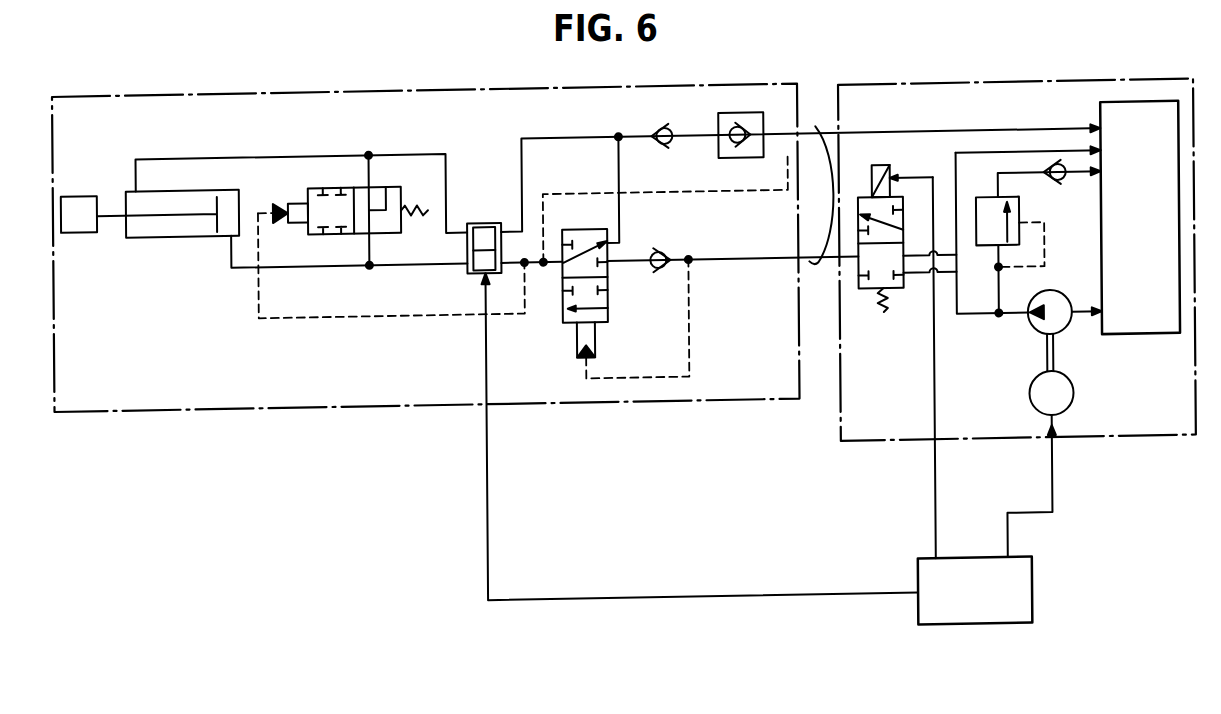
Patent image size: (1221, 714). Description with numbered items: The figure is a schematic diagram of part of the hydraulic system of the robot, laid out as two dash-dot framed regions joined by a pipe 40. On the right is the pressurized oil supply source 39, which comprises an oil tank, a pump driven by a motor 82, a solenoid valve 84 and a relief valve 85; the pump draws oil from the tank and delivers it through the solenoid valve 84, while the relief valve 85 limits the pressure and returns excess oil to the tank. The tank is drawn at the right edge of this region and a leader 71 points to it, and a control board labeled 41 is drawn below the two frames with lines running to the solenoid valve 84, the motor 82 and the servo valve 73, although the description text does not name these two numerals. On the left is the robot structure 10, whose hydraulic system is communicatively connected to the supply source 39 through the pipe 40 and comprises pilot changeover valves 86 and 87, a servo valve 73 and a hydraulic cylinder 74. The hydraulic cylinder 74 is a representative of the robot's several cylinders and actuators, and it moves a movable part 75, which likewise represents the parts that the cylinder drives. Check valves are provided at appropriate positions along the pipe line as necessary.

The robot structure 10 is at (476, 96).
The pressurized oil supply source 39 is at (921, 99).
The pipe 40 is at (813, 138).
The control board 41 is at (918, 573).
The oil tank 71 is at (1100, 272).
The servo valve 73 is at (485, 231).
The hydraulic cylinder 74 is at (180, 240).
The movable part 75 is at (78, 234).
The motor 82 is at (1072, 410).
The solenoid valve 84 is at (899, 305).
The relief valve 85 is at (1018, 221).
The pilot changeover valve 86 is at (607, 309).
The pilot changeover valve 87 is at (347, 193).